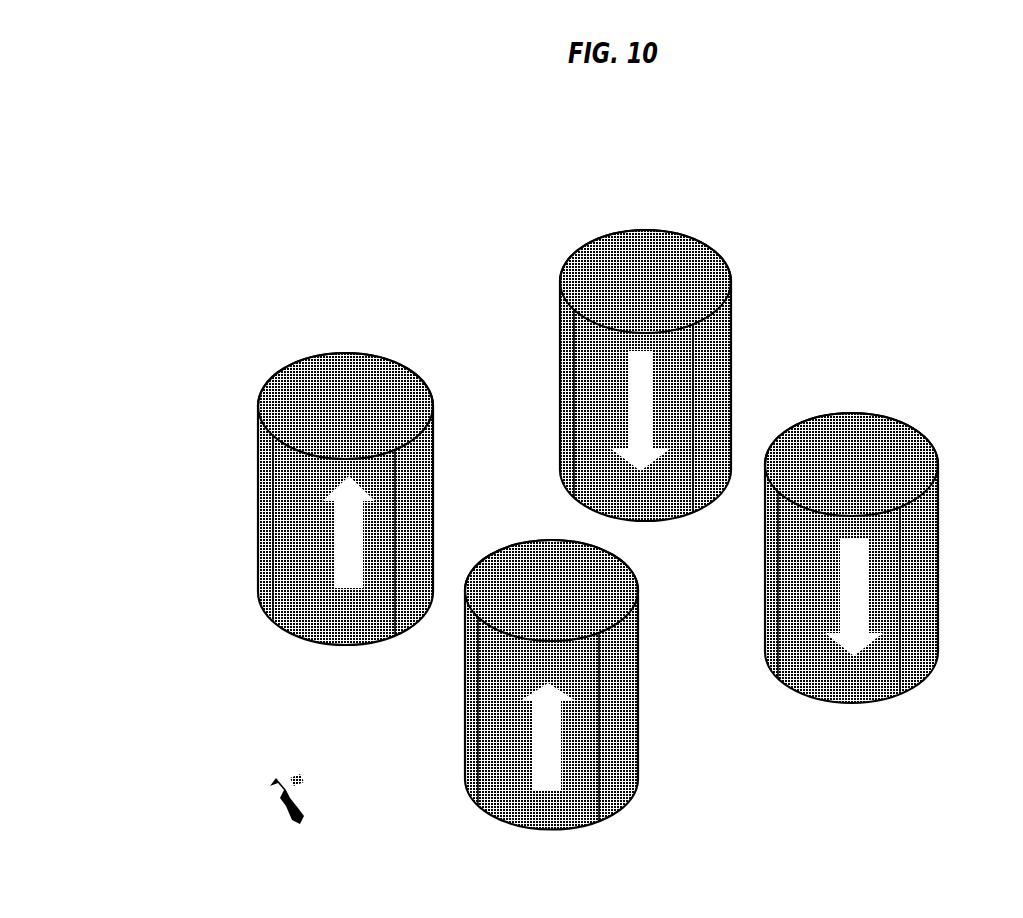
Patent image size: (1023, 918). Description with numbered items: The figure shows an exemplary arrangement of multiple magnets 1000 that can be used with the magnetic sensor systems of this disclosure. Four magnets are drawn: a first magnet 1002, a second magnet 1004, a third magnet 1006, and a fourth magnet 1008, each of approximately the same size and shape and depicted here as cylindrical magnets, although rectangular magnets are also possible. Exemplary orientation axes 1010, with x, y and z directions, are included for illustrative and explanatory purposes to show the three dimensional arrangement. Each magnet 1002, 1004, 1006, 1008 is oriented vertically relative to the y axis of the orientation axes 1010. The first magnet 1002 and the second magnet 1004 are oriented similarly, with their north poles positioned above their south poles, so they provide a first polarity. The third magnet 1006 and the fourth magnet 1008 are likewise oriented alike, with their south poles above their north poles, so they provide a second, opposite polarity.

The magnet array 1000 is at (152, 114).
The first magnet 1002 is at (250, 488).
The second magnet 1004 is at (628, 777).
The third magnet 1006 is at (542, 272).
The fourth magnet 1008 is at (897, 682).
The orientation axes 1010 is at (258, 817).